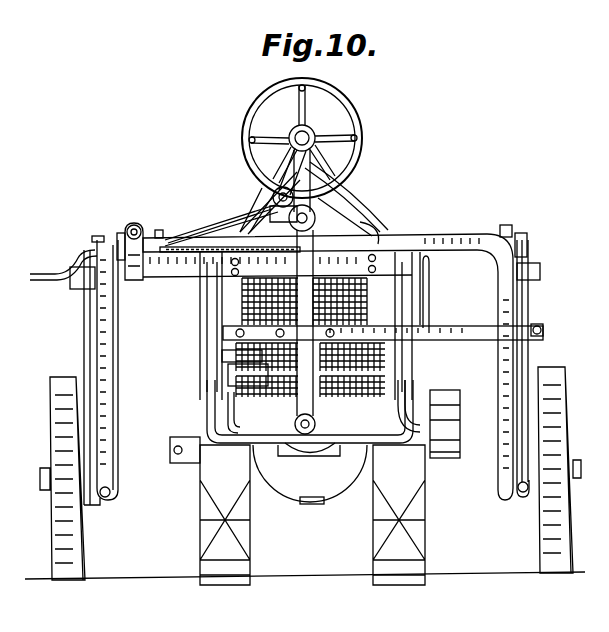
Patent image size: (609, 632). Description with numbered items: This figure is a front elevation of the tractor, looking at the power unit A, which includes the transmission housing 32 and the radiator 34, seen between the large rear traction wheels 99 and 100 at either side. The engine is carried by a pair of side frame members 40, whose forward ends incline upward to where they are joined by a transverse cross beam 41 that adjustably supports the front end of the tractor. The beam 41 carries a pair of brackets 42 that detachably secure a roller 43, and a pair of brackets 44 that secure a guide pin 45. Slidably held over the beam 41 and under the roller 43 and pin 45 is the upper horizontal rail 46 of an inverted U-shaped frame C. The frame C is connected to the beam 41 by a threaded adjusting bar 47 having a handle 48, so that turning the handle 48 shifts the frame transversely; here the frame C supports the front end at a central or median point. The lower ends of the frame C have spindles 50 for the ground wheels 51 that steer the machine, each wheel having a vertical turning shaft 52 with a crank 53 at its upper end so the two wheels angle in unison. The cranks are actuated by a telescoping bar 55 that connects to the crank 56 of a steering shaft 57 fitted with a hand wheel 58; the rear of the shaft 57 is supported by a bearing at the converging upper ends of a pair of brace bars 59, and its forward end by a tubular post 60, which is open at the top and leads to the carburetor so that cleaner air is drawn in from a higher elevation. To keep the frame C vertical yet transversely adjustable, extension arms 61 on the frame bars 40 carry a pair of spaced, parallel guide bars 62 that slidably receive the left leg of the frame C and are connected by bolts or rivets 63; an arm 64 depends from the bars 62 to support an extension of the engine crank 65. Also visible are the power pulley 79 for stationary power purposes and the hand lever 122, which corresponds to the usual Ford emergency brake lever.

The transmission housing 32 is at (298, 494).
The radiator 34 is at (365, 243).
The side frame members 40 is at (208, 303).
The transverse cross beam 41 is at (185, 278).
The brackets 42 is at (330, 218).
The roller 43 is at (322, 210).
The brackets 44 is at (141, 228).
The guide pin 45 is at (132, 220).
The upper horizontal rail 46 is at (450, 236).
The threaded adjusting bar 47 is at (195, 244).
The handle 48 is at (54, 274).
The spindles 50 is at (104, 496).
The ground wheels 51 is at (72, 558).
The vertical turning shaft 52 is at (96, 348).
The cranks 53 is at (97, 236).
The bar 55 is at (180, 236).
The crank 56 is at (278, 197).
The steering shaft 57 is at (262, 132).
The hand wheel 58 is at (285, 84).
The brace bars 59 is at (318, 178).
The tubular post 60 is at (299, 156).
The extension arms 61 is at (228, 352).
The guide bars 62 is at (455, 328).
The bolts or rivets 63 is at (542, 327).
The arm 64 is at (247, 364).
The engine crank 65 is at (297, 400).
The power pulley 79 is at (449, 460).
The traction wheel 99 is at (420, 553).
The traction wheel 100 is at (214, 562).
The hand lever 122 is at (429, 272).
The power unit A is at (377, 225).
The inverted U-shaped frame C is at (124, 410).